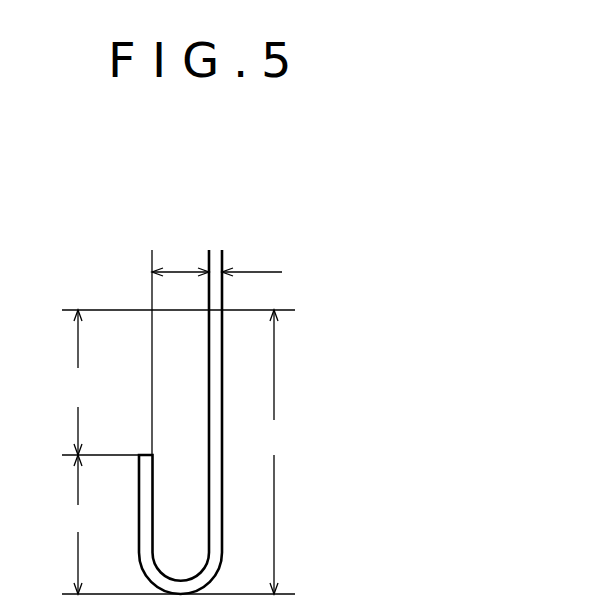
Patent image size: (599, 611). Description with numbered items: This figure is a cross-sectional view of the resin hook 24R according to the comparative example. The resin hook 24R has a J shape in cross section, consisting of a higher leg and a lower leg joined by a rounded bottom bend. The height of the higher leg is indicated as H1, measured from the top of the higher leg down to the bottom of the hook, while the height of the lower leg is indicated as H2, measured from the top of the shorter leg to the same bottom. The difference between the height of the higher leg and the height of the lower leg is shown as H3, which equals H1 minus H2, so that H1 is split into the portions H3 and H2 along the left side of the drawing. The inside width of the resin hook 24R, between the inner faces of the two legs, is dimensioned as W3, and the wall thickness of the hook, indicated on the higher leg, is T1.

The resin hook 24R is at (223, 151).
The height of the higher leg H1 is at (275, 452).
The height of the lower leg H2 is at (77, 524).
The difference between the heights of the higher and lower legs H3 is at (77, 382).
The inside width of the resin hook W3 is at (180, 247).
The thickness of the resin hook T1 is at (215, 250).